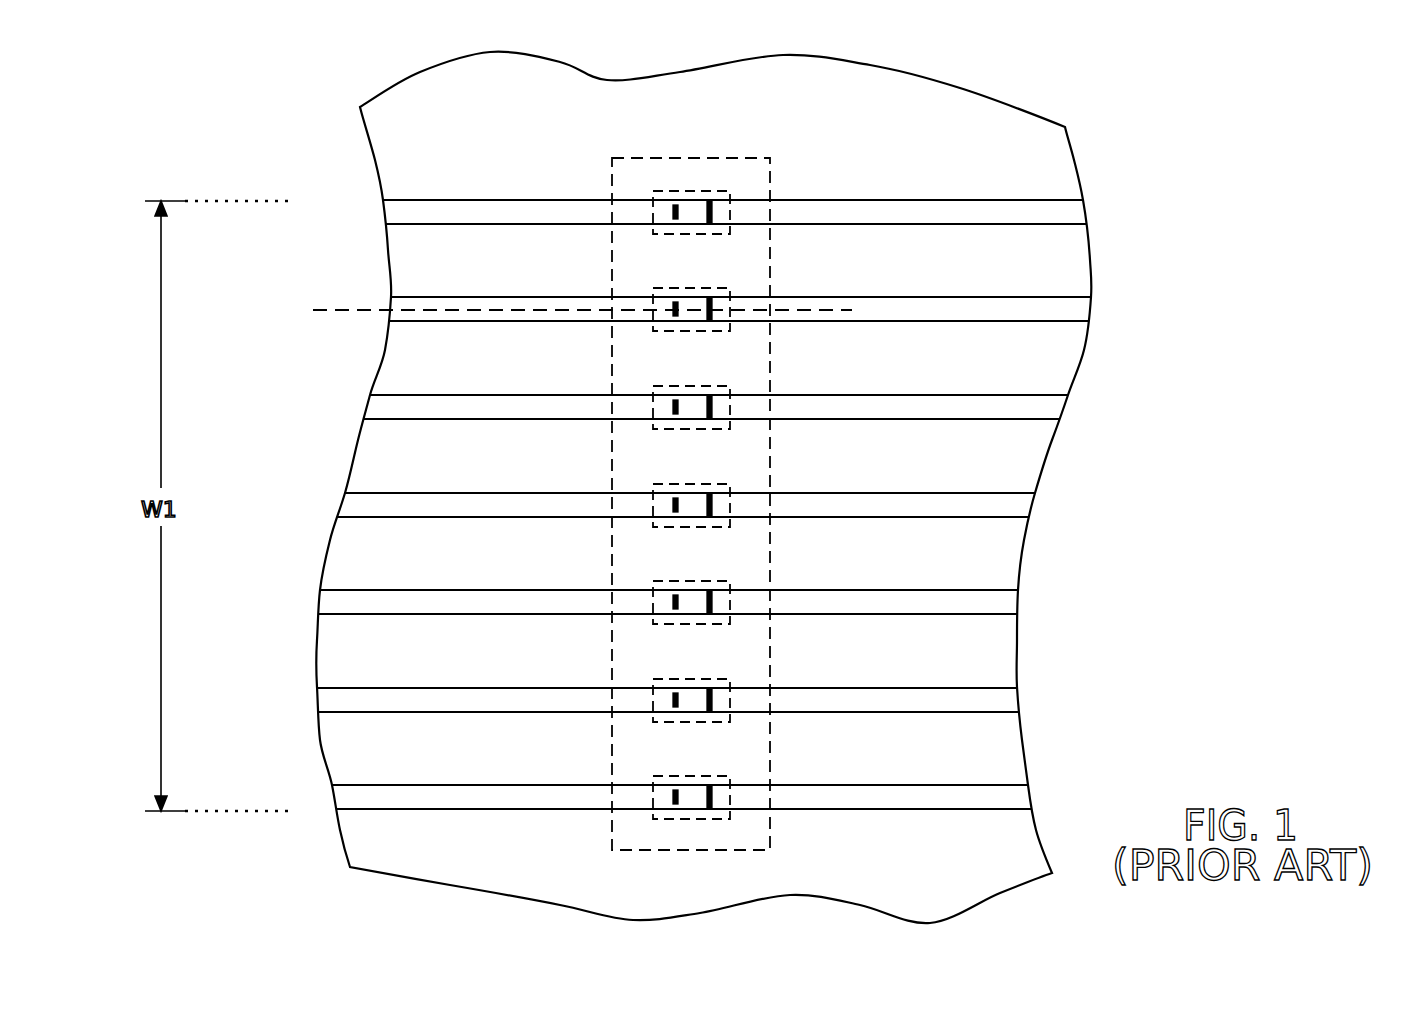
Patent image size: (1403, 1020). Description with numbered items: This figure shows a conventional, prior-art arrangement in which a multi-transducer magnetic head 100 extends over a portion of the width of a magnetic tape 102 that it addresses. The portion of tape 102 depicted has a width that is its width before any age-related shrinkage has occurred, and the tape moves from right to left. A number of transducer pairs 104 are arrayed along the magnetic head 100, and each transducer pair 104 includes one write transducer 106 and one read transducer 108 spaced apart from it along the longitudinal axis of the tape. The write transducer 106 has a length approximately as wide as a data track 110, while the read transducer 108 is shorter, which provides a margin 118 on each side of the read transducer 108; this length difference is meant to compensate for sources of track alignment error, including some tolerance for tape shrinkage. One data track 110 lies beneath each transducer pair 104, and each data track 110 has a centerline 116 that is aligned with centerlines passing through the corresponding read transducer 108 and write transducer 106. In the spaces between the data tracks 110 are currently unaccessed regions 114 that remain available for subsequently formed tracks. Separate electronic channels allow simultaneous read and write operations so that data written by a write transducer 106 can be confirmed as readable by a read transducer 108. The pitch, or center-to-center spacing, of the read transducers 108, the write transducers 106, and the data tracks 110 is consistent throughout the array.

The multi-transducer magnetic head 100 is at (760, 157).
The magnetic tape 102 is at (1052, 648).
The transducer pair 104 is at (672, 205).
The write transducer 106 is at (714, 298).
The read transducer 108 is at (672, 303).
The data track 110 is at (1087, 212).
The unaccessed region 114 is at (945, 507).
The centerline 116 is at (318, 310).
The margin 118 is at (671, 203).